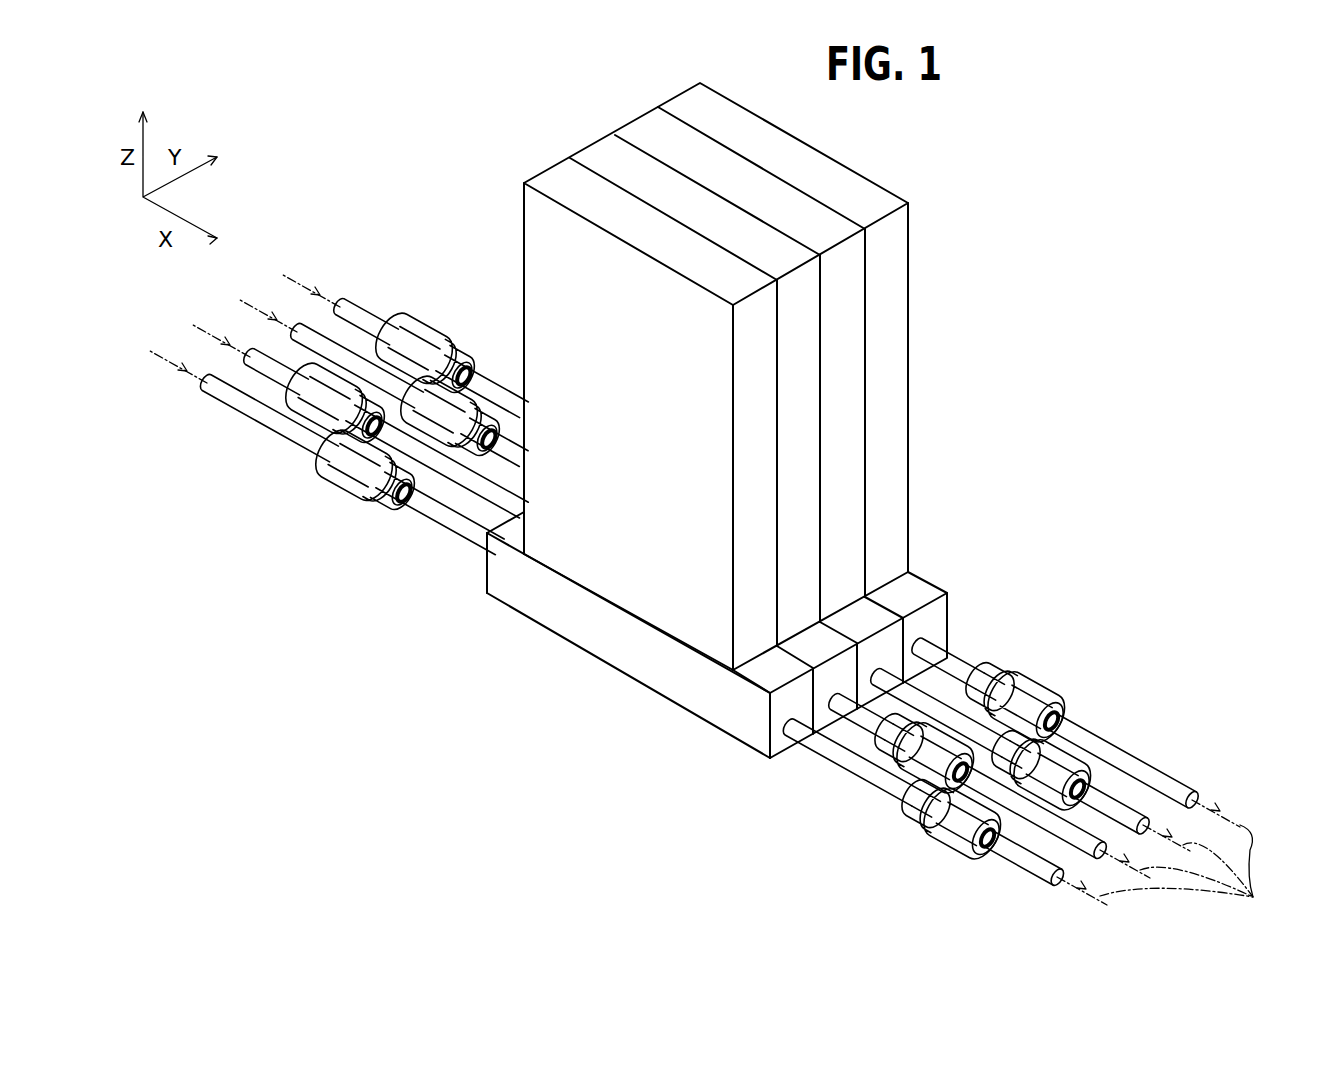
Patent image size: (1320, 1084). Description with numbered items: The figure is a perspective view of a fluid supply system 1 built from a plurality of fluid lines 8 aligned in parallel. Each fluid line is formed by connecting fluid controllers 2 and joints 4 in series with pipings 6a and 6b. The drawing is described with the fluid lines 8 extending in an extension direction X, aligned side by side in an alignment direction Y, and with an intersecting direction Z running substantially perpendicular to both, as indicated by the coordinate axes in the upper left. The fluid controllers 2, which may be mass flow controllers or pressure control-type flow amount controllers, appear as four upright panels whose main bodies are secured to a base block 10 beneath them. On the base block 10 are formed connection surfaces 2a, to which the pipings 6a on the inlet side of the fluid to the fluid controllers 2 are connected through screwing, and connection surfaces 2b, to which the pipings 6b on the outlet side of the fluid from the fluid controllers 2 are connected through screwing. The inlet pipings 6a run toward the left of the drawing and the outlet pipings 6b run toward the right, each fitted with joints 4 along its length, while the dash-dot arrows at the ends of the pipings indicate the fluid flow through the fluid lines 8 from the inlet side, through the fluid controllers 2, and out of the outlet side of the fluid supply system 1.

The fluid supply system 1 is at (1022, 170).
The fluid controllers 2 is at (674, 88).
The connection surfaces 2a is at (480, 582).
The connection surfaces 2b is at (788, 742).
The joints 4 is at (342, 360).
The pipings 6a is at (500, 528).
The pipings 6b is at (953, 727).
The fluid lines 8 is at (1169, 860).
The base block 10 is at (644, 668).